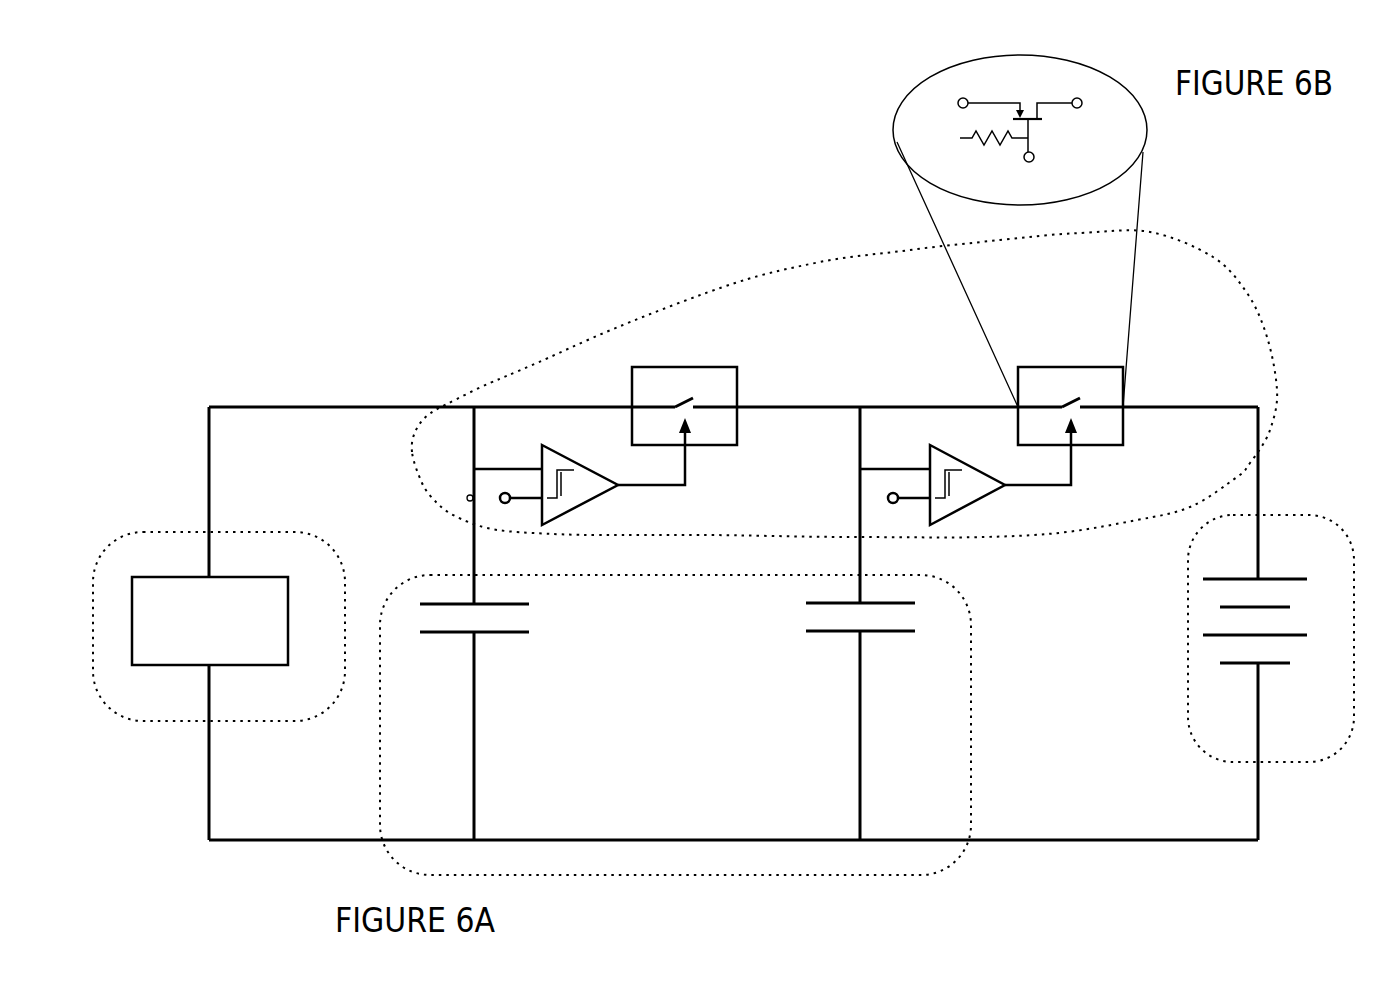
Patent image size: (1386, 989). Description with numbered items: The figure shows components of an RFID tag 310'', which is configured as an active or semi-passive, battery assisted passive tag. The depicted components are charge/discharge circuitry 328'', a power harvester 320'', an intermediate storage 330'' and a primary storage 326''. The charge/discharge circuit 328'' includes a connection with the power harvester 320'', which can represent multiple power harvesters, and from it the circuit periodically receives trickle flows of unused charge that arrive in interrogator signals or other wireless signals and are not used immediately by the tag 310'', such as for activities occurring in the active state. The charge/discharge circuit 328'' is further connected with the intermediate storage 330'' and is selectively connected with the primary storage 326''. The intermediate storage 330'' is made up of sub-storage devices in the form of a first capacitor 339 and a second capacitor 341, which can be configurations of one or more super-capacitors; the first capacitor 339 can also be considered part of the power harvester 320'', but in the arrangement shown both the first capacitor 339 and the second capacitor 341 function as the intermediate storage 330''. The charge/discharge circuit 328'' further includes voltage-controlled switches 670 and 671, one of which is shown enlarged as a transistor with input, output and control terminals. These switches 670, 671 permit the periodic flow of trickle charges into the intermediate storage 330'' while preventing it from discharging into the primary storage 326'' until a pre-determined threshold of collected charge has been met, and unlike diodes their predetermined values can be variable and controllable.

In FIG. 6A, the RFID tag 310'' is at (733, 510).
In FIG. 6A, the power harvester 320'' is at (219, 669).
In FIG. 6A, the primary storage 326'' is at (1283, 684).
In FIG. 6A, the charge/discharge circuitry 328'' is at (844, 366).
In FIG. 6A, the intermediate storage 330'' is at (750, 641).
In FIG. 6A, the capacitor C1 339 is at (493, 623).
In FIG. 6A, the capacitor C2 341 is at (882, 623).
In FIG. 6A, the voltage-controlled switch 670 is at (737, 383).
In FIG. 6B, the voltage-controlled switch 670 is at (895, 143).
In FIG. 6A, the voltage-controlled switch 671 is at (1123, 392).